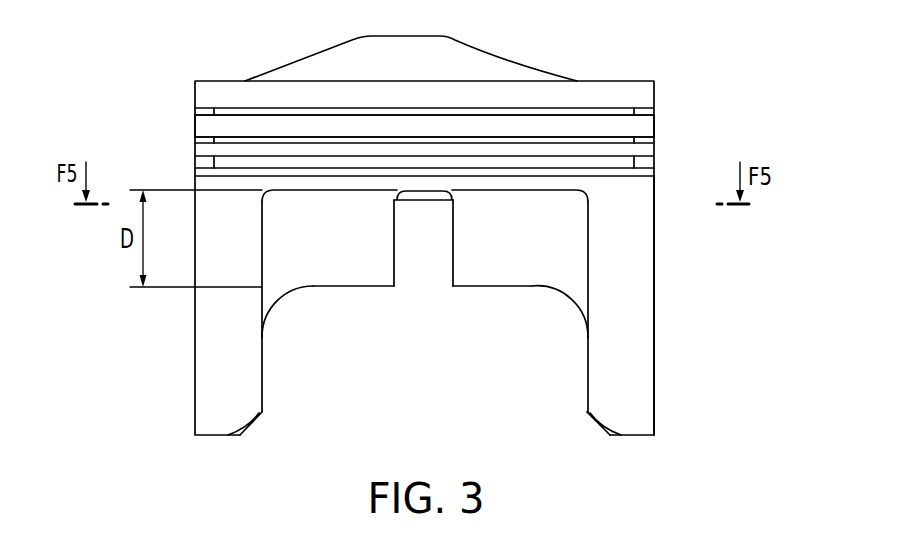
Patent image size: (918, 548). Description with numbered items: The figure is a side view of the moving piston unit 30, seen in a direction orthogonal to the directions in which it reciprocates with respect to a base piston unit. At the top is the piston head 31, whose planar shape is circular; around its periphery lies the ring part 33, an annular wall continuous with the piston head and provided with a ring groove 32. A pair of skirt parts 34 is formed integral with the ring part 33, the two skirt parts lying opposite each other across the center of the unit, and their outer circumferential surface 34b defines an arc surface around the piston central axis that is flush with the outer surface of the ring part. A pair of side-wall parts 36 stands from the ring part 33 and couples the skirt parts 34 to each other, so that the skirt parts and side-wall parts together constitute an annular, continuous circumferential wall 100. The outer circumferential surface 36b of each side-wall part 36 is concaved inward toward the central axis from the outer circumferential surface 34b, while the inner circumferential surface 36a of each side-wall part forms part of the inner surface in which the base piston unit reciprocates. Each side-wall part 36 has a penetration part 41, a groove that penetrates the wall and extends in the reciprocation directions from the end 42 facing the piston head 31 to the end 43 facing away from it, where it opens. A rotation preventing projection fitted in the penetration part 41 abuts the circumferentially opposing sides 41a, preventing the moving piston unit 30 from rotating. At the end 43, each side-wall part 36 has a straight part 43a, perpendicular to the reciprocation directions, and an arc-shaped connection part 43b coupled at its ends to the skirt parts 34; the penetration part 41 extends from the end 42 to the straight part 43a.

The moving piston unit 30 is at (639, 76).
The piston head 31 is at (430, 52).
The ring groove 32 is at (645, 112).
The ring part 33 is at (661, 127).
The skirt part 34 is at (640, 307).
The outer circumferential surface of the skirt part 34b is at (656, 359).
The side-wall part 36 is at (490, 277).
The inner circumferential surface of the side-wall part 36a is at (378, 275).
The outer circumferential surface of the side-wall part 36b is at (527, 268).
The penetration part 41 is at (430, 258).
The side of the penetration part 41a is at (397, 247).
The end of the side-wall part facing the piston head 42 is at (364, 190).
The end of the side-wall part facing away from the piston head 43 is at (347, 287).
The straight part 43a is at (315, 287).
The connection part 43b is at (284, 297).
The circumferential wall 100 is at (656, 256).